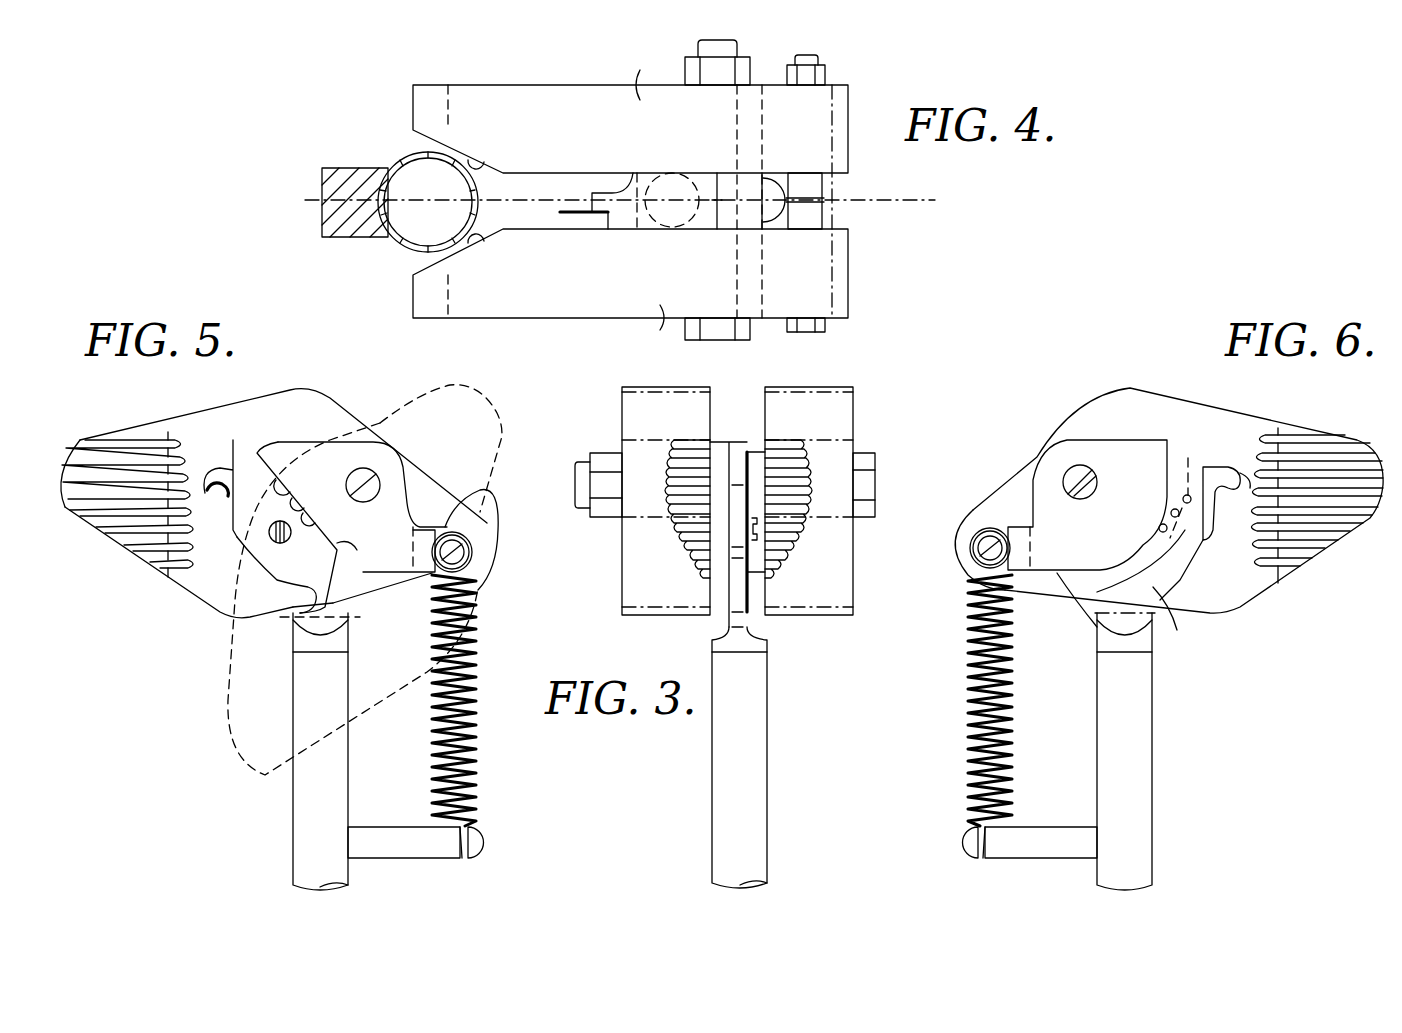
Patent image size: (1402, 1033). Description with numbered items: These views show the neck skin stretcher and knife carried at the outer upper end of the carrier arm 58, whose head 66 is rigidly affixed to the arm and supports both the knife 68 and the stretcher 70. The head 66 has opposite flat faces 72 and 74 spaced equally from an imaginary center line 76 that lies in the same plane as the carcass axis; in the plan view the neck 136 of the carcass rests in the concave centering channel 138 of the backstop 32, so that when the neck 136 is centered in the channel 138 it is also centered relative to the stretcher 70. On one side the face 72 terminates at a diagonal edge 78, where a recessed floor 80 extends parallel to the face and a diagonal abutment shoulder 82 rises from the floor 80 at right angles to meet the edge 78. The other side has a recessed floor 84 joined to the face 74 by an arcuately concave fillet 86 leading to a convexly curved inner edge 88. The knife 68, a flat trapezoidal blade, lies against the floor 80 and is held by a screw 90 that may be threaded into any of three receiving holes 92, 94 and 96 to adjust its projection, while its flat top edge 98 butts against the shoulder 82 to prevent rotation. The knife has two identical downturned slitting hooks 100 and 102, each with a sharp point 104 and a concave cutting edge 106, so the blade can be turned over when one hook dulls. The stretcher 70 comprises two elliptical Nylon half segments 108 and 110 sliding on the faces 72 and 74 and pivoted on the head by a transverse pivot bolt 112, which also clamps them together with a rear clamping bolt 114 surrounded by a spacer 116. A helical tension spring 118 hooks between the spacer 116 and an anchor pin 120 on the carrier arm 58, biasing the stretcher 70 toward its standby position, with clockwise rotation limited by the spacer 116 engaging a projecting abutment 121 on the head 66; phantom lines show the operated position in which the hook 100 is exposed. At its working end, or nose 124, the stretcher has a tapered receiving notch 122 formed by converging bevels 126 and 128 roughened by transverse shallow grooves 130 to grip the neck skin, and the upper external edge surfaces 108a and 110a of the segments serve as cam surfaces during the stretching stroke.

In FIG. 4, the backstop 32 is at (322, 190).
In FIG. 3, the carrier arm 58 is at (730, 775).
In FIG. 5, the carrier arm 58 is at (300, 840).
In FIG. 6, the carrier arm 58 is at (1140, 790).
In FIG. 4, the head 66 is at (585, 178).
In FIG. 3, the head 66 is at (728, 425).
In FIG. 5, the head 66 is at (315, 440).
In FIG. 6, the head 66 is at (1130, 435).
In FIG. 4, the knife 68 is at (560, 188).
In FIG. 3, the knife 68 is at (760, 620).
In FIG. 5, the knife 68 is at (222, 462).
In FIG. 6, the knife 68 is at (1203, 460).
In FIG. 4, the neck skin stretcher 70 is at (405, 96).
In FIG. 3, the neck skin stretcher 70 is at (862, 392).
In FIG. 5, the neck skin stretcher 70 is at (175, 600).
In FIG. 6, the neck skin stretcher 70 is at (1280, 600).
In FIG. 4, the flat face 72 is at (650, 229).
In FIG. 5, the flat face 72 is at (365, 450).
In FIG. 4, the flat face 74 is at (655, 175).
In FIG. 6, the flat face 74 is at (1103, 452).
In FIG. 4, the center line 76 is at (910, 200).
In FIG. 4, the diagonal edge 78 is at (605, 229).
In FIG. 5, the diagonal edge 78 is at (340, 540).
In FIG. 4, the recessed floor 80 is at (575, 229).
In FIG. 3, the recessed floor 80 is at (760, 455).
In FIG. 5, the recessed floor 80 is at (285, 608).
In FIG. 4, the abutment shoulder 82 is at (598, 229).
In FIG. 3, the abutment shoulder 82 is at (750, 445).
In FIG. 5, the abutment shoulder 82 is at (290, 482).
In FIG. 3, the recessed floor 84 is at (715, 510).
In FIG. 6, the recessed floor 84 is at (1157, 590).
In FIG. 4, the fillet 86 is at (595, 182).
In FIG. 3, the fillet 86 is at (720, 568).
In FIG. 6, the fillet 86 is at (1080, 580).
In FIG. 6, the inner edge 88 is at (1122, 560).
In FIG. 3, the screw 90 is at (760, 560).
In FIG. 5, the screw 90 is at (275, 545).
In FIG. 6, the receiving hole 92 is at (1182, 497).
In FIG. 6, the receiving hole 94 is at (1170, 513).
In FIG. 6, the receiving hole 96 is at (1162, 533).
In FIG. 5, the top edge 98 is at (312, 535).
In FIG. 5, the slitting hook 100 is at (200, 470).
In FIG. 6, the slitting hook 100 is at (1222, 465).
In FIG. 5, the slitting hook 102 is at (345, 608).
In FIG. 5, the point 104 is at (228, 495).
In FIG. 6, the point 104 is at (1255, 485).
In FIG. 5, the cutting edge 106 is at (234, 470).
In FIG. 6, the cutting edge 106 is at (1226, 492).
In FIG. 4, the half segment 108 is at (515, 318).
In FIG. 3, the half segment 108 is at (828, 395).
In FIG. 6, the half segment 108 is at (1265, 425).
In FIG. 4, the upper external edge surface 108a is at (639, 329).
In FIG. 3, the upper external edge surface 108a is at (805, 392).
In FIG. 6, the upper external edge surface 108a is at (1110, 388).
In FIG. 4, the half segment 110 is at (512, 85).
In FIG. 3, the half segment 110 is at (625, 410).
In FIG. 5, the half segment 110 is at (340, 405).
In FIG. 4, the upper external edge surface 110a is at (639, 71).
In FIG. 3, the upper external edge surface 110a is at (645, 387).
In FIG. 5, the upper external edge surface 110a is at (297, 390).
In FIG. 4, the pivot bolt 112 is at (730, 42).
In FIG. 3, the pivot bolt 112 is at (865, 458).
In FIG. 5, the pivot bolt 112 is at (380, 480).
In FIG. 6, the pivot bolt 112 is at (1060, 480).
In FIG. 4, the clamping bolt 114 is at (820, 58).
In FIG. 5, the clamping bolt 114 is at (462, 560).
In FIG. 6, the clamping bolt 114 is at (978, 555).
In FIG. 4, the spacer 116 is at (815, 183).
In FIG. 5, the spacer 116 is at (468, 540).
In FIG. 6, the spacer 116 is at (985, 528).
In FIG. 4, the tension spring 118 is at (820, 205).
In FIG. 5, the tension spring 118 is at (485, 770).
In FIG. 6, the tension spring 118 is at (968, 725).
In FIG. 5, the anchor pin 120 is at (385, 855).
In FIG. 6, the anchor pin 120 is at (1058, 855).
In FIG. 4, the abutment 121 is at (775, 220).
In FIG. 5, the abutment 121 is at (484, 505).
In FIG. 4, the receiving notch 122 is at (425, 143).
In FIG. 3, the receiving notch 122 is at (668, 560).
In FIG. 4, the nose 124 is at (405, 297).
In FIG. 5, the nose 124 is at (78, 440).
In FIG. 6, the nose 124 is at (1358, 440).
In FIG. 4, the bevel 126 is at (480, 245).
In FIG. 3, the bevel 126 is at (810, 470).
In FIG. 6, the bevel 126 is at (1323, 480).
In FIG. 4, the bevel 128 is at (485, 160).
In FIG. 3, the bevel 128 is at (670, 455).
In FIG. 5, the bevel 128 is at (130, 465).
In FIG. 5, the grooves 130 is at (125, 545).
In FIG. 6, the grooves 130 is at (1322, 528).
In FIG. 4, the neck 136 is at (398, 238).
In FIG. 4, the centering channel 138 is at (403, 175).